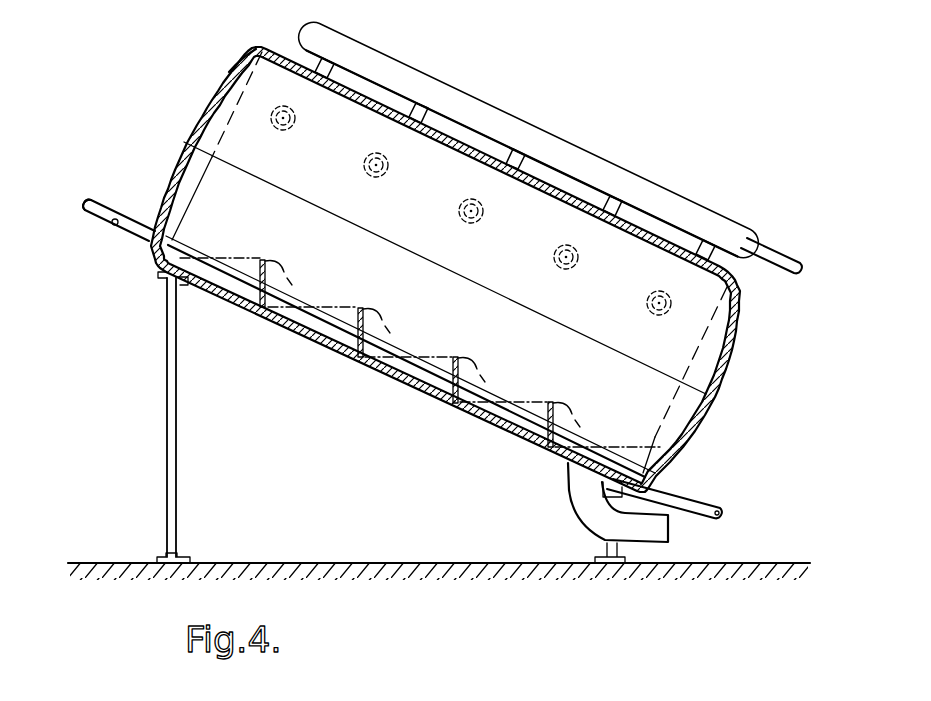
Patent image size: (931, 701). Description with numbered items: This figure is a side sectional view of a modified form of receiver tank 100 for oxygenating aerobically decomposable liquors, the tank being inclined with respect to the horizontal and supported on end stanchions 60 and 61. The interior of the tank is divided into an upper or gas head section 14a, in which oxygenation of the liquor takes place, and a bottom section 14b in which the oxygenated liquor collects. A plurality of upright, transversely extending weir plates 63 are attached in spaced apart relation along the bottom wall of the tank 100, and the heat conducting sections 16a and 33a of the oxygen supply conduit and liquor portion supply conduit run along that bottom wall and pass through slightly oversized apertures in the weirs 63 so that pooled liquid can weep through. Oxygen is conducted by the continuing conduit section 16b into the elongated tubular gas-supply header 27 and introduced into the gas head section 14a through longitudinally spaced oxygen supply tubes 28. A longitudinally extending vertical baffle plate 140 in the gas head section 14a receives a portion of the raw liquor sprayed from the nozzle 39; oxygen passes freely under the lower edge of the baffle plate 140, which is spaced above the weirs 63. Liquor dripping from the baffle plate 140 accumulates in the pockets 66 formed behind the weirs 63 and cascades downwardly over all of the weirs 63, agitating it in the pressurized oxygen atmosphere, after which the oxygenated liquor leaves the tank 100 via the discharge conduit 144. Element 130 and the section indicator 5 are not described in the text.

The receiver tank 100 is at (186, 99).
The dished end wall 130 is at (228, 72).
The baffle plate 140 is at (212, 157).
The upper or gas head section 14a is at (270, 88).
The bottom section 14b is at (368, 270).
The nozzle 39 is at (337, 163).
The gas-supply header 27 is at (334, 38).
The oxygen supply tubes 28 is at (503, 163).
The continuing section of the oxygen supply conduit 16b is at (790, 260).
The heat-conductive section of the oxygen supply conduit 16a is at (135, 232).
The heat conducting section of the liquor portion supply conduit 33a is at (100, 203).
The discharge conduit 144 is at (657, 543).
The end stanchion 61 is at (600, 543).
The end stanchion 60 is at (167, 368).
The weir plates 63 is at (437, 357).
The pockets 66 is at (544, 403).
The section line 5 is at (672, 157).